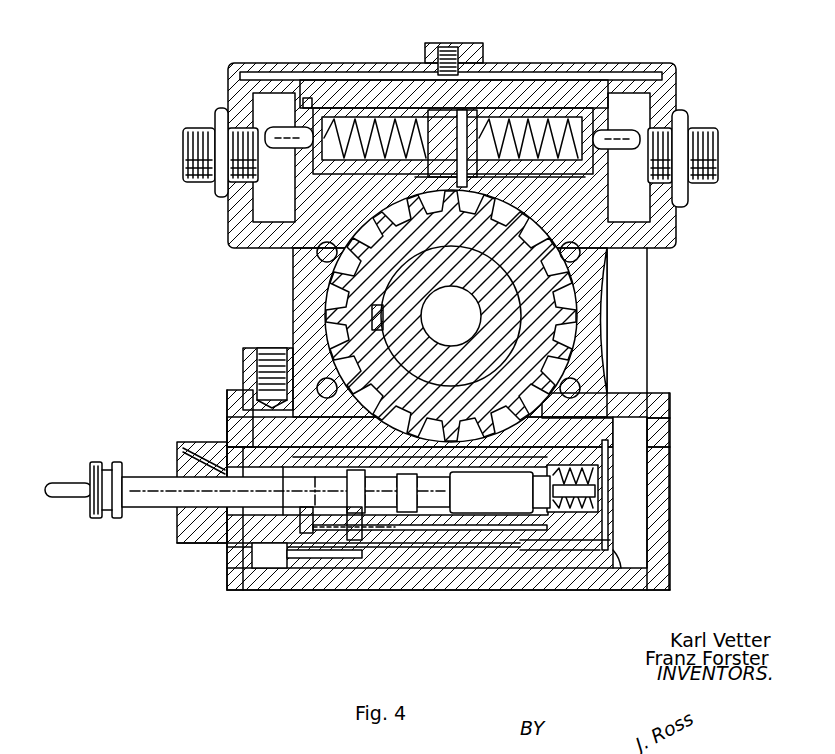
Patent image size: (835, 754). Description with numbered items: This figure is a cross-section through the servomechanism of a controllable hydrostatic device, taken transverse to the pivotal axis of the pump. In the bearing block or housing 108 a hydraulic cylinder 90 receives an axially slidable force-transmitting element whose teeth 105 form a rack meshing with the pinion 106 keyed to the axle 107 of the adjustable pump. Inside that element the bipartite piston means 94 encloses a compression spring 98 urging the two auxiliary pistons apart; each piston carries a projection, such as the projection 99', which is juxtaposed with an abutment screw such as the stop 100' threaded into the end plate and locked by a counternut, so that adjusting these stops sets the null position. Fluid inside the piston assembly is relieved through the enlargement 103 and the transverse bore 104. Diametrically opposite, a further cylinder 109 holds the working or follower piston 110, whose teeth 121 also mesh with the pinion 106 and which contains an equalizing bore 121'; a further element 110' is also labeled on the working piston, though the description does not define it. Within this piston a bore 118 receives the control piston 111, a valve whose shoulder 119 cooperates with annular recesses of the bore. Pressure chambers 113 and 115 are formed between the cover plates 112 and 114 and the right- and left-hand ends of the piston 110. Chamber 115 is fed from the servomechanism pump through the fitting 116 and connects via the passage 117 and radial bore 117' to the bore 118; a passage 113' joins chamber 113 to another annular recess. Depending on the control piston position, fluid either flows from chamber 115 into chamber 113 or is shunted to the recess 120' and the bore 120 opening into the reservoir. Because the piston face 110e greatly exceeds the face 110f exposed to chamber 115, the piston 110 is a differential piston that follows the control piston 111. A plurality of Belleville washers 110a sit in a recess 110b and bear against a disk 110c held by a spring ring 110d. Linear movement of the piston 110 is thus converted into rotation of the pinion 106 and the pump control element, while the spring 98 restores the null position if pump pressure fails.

The hydraulic cylinder 90 is at (622, 100).
The bipartite piston means 94 is at (523, 103).
The compression spring 98 is at (357, 125).
The enlargement 103 is at (435, 123).
The transverse bore 104 is at (463, 180).
The projection 99' is at (616, 162).
The abutment screw 100' is at (715, 158).
The teeth 105 is at (570, 212).
The pinion 106 is at (576, 318).
The axle 107 is at (398, 296).
The bearing block or housing 108 is at (610, 290).
The fitting 116 is at (245, 365).
The piston face 110f is at (280, 426).
The working or follower piston 110 is at (448, 552).
The pressure chamber 113 is at (675, 492).
The cover plate 112 is at (668, 490).
The disk 110c is at (607, 460).
The spring ring 110d is at (608, 540).
The piston face 110e is at (620, 562).
The cylinder 109 is at (615, 590).
The Belleville washers 110a is at (568, 505).
The recess 110b is at (513, 592).
The passage 113' is at (373, 578).
The passage 110' is at (373, 597).
The shoulder 119 is at (261, 562).
The pressure chamber 115 is at (256, 590).
The cover plate 114 is at (227, 591).
The bore 120 is at (162, 468).
The recess 120' is at (199, 569).
The control piston 111 is at (140, 508).
The radial bore 117' is at (346, 583).
The passage 117 is at (345, 599).
The bore 118 is at (383, 508).
The teeth 121 is at (624, 390).
The equalizing bore 121' is at (500, 490).